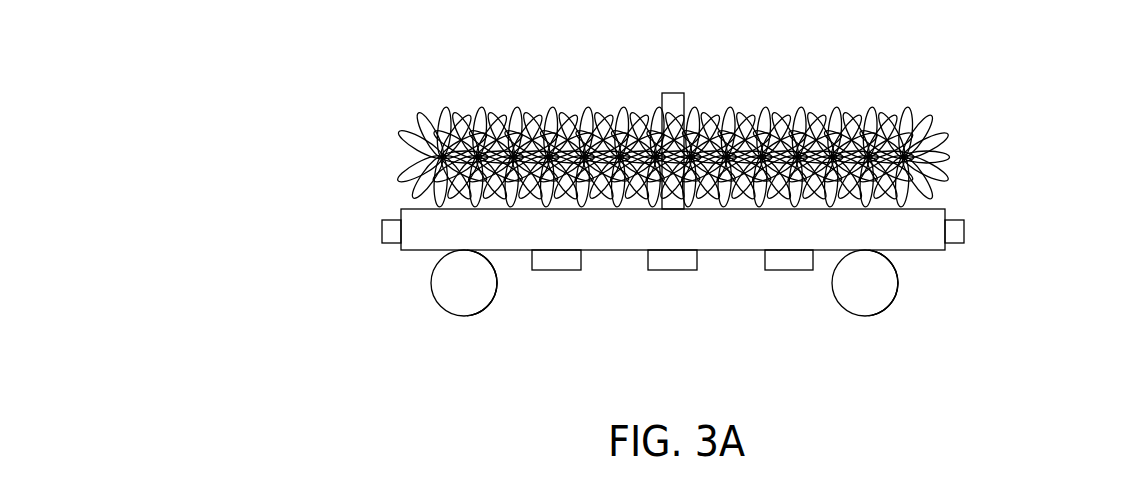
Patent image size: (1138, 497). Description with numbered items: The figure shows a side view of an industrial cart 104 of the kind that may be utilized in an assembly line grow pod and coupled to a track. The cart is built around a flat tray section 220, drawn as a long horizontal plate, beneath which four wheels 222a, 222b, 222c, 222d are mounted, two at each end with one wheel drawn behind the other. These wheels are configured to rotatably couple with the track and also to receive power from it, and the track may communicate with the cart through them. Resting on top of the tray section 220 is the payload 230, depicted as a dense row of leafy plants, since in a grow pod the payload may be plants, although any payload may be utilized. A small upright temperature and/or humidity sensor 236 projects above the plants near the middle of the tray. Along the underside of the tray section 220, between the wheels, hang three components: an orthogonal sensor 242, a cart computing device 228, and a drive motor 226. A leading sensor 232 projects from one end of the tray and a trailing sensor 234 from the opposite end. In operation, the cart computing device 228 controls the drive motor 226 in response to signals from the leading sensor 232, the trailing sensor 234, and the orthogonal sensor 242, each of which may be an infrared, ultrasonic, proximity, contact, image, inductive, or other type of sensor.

The industrial cart 104 is at (683, 233).
The tray section 220 is at (681, 233).
The payload 230 is at (673, 125).
The temperature and/or humidity sensor 236 is at (726, 123).
The leading sensor 232 is at (338, 265).
The trailing sensor 234 is at (1006, 266).
The orthogonal sensor 242 is at (570, 270).
The cart computing device 228 is at (686, 314).
The drive motor 226 is at (793, 315).
The wheel 222a is at (409, 313).
The wheel 222b is at (869, 339).
The wheel 222c is at (528, 326).
The wheel 222d is at (931, 324).